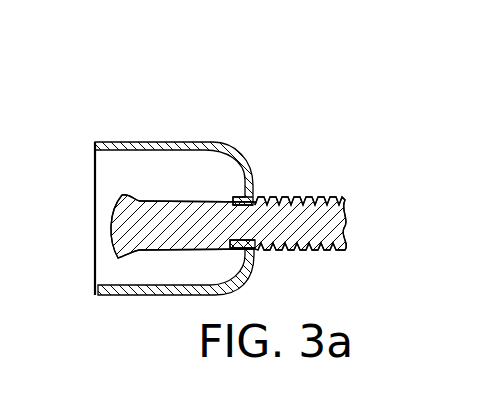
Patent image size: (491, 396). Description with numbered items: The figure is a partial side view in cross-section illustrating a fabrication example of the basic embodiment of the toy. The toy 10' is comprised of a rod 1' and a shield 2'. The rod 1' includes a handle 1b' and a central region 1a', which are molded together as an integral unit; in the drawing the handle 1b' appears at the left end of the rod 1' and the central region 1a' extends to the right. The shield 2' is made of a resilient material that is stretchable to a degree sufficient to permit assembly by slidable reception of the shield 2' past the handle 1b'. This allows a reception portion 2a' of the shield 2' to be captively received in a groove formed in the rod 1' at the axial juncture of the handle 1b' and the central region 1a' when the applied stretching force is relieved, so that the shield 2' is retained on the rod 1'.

The toy 10' is at (251, 191).
The shield 2' is at (234, 186).
The reception portion 2a' is at (302, 253).
The rod 1' is at (251, 227).
The central region 1a' is at (337, 198).
The handle 1b' is at (169, 276).